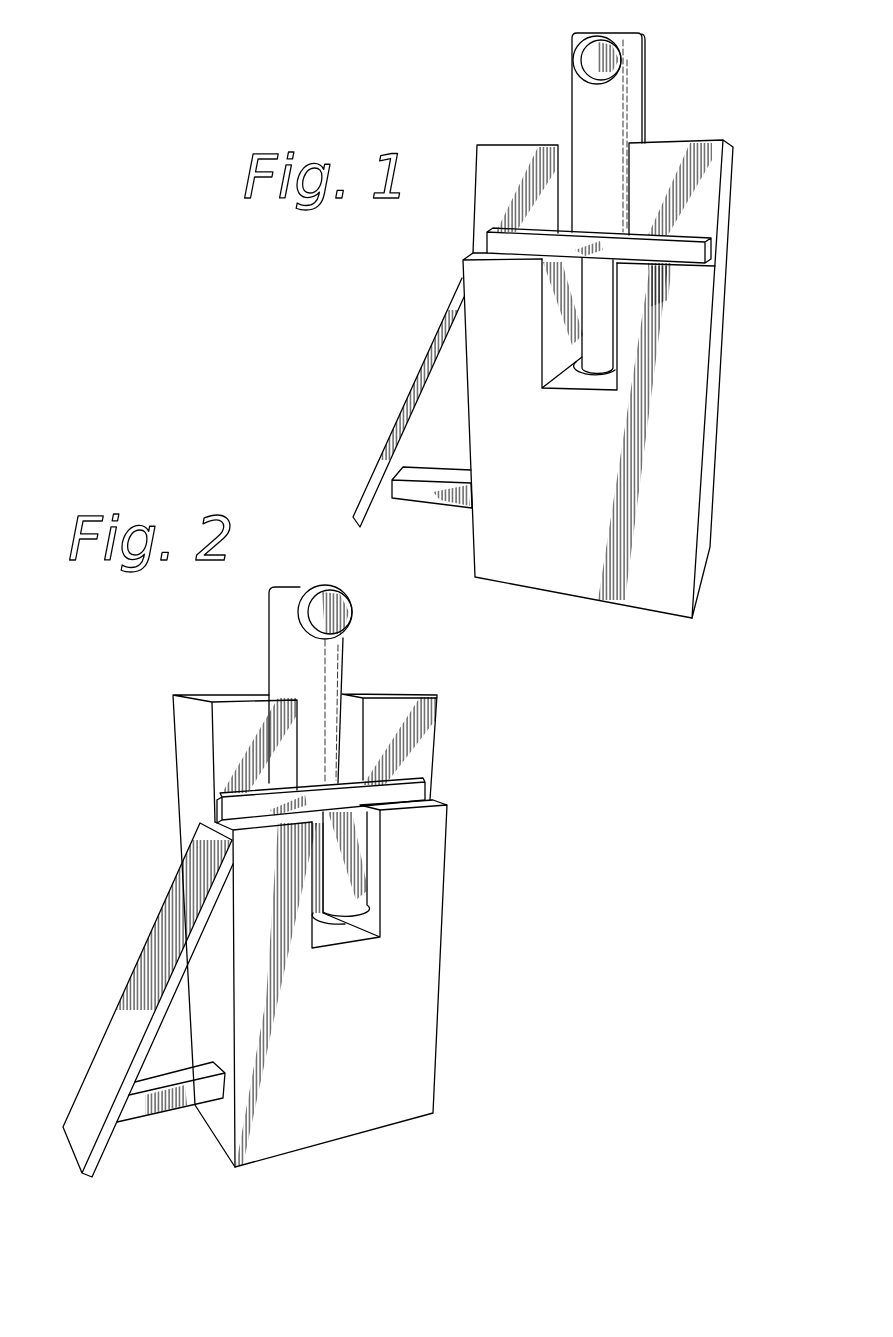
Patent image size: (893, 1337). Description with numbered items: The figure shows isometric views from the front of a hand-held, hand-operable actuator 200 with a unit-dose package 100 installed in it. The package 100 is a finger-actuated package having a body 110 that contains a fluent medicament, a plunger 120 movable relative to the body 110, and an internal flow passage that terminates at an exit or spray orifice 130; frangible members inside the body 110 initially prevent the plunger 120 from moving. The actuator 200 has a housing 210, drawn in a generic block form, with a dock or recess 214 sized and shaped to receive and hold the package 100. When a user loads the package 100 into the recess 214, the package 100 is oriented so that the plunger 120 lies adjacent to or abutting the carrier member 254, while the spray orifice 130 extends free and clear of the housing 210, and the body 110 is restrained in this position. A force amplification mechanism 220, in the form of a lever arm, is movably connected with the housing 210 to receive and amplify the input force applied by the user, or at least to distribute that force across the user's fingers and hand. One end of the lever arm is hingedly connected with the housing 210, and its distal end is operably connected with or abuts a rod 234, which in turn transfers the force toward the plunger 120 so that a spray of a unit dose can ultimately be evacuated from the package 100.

In FIG. 1, the package 100 is at (641, 204).
In FIG. 2, the package 100 is at (345, 765).
In FIG. 1, the body 110 is at (618, 150).
In FIG. 2, the body 110 is at (316, 668).
In FIG. 1, the plunger 120 is at (605, 300).
In FIG. 2, the plunger 120 is at (323, 873).
In FIG. 1, the spray orifice 130 is at (587, 66).
In FIG. 2, the spray orifice 130 is at (340, 603).
In FIG. 1, the actuator 200 is at (520, 402).
In FIG. 2, the actuator 200 is at (279, 965).
In FIG. 1, the housing 210 is at (674, 542).
In FIG. 2, the housing 210 is at (214, 755).
In FIG. 1, the recess 214 is at (552, 304).
In FIG. 2, the recess 214 is at (369, 837).
In FIG. 1, the force amplification mechanism 220 is at (413, 420).
In FIG. 2, the force amplification mechanism 220 is at (152, 992).
In FIG. 1, the rod 234 is at (437, 492).
In FIG. 2, the rod 234 is at (160, 1086).
In FIG. 1, the carrier member 254 is at (580, 357).
In FIG. 2, the carrier member 254 is at (323, 912).